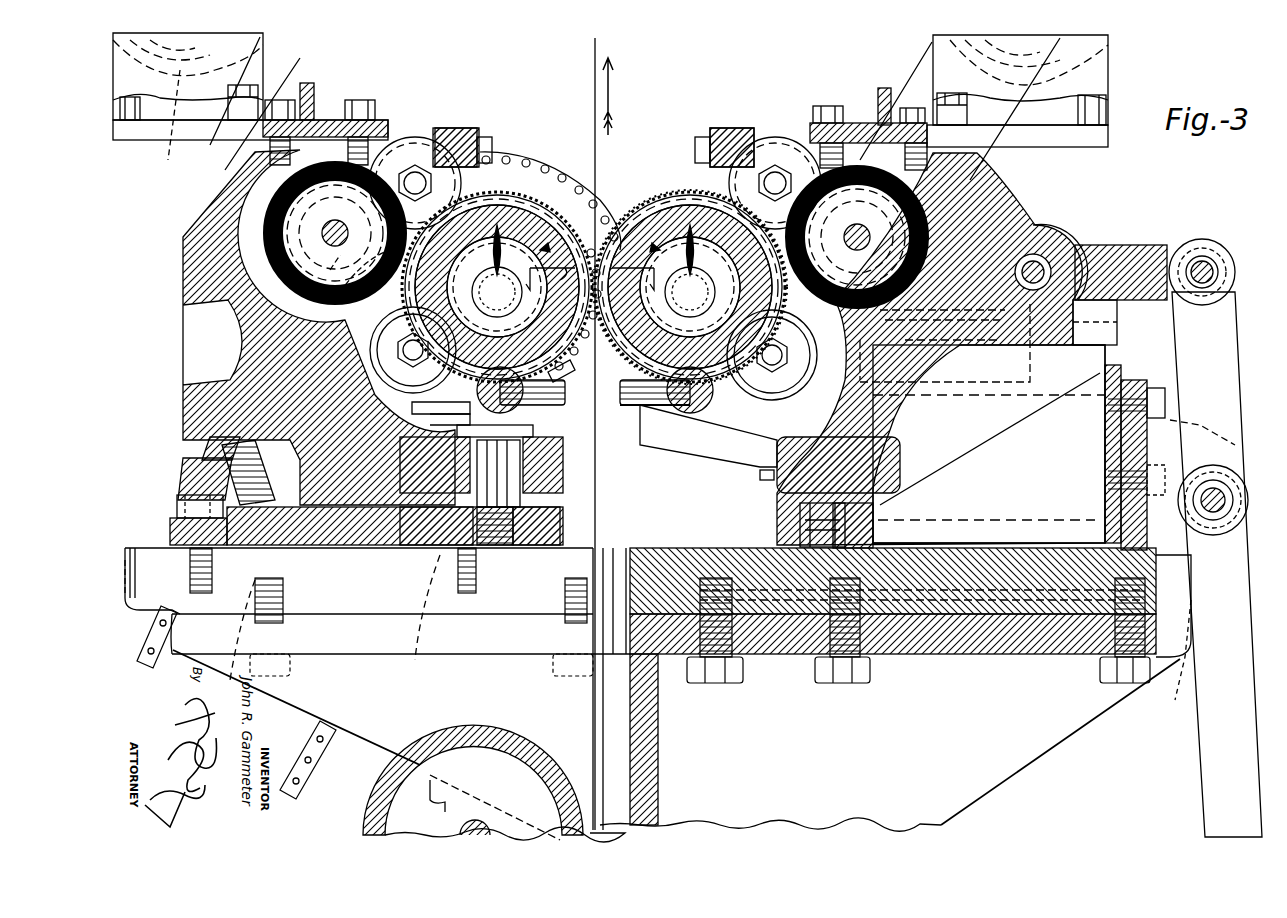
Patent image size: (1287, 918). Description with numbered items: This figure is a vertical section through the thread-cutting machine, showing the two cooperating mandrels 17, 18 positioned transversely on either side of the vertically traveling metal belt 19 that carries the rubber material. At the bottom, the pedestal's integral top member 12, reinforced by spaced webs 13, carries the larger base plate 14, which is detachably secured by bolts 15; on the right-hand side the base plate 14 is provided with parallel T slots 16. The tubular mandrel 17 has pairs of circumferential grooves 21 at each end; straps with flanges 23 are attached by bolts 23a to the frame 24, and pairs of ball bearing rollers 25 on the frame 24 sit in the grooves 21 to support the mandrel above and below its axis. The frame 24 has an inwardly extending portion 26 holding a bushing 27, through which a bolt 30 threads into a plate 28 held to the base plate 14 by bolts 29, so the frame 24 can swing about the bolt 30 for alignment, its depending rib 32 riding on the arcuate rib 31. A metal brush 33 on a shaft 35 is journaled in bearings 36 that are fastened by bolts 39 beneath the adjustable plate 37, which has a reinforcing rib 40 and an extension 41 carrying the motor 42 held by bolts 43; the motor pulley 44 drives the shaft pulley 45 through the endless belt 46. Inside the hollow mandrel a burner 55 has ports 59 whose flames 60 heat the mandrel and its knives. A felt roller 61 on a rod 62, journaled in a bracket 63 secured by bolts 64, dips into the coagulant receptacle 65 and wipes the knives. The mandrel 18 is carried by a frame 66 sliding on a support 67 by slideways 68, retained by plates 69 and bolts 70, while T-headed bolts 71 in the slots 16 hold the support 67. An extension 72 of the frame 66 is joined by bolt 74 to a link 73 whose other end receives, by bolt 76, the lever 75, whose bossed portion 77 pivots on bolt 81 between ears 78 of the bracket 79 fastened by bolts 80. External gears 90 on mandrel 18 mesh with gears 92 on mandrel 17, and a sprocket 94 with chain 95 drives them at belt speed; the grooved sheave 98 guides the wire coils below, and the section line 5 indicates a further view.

The direction arrow / section indicator 5 is at (593, 266).
The top member 12 is at (1088, 660).
The webs 13 is at (372, 735).
The base plate 14 is at (140, 610).
The bolts 15 is at (550, 660).
The T slots 16 is at (1177, 650).
The mandrel 17 is at (512, 205).
The mandrel 18 is at (668, 195).
The metal belt 19 is at (593, 497).
The circumferential grooves 21 is at (572, 185).
The flanges 23 is at (460, 128).
The bolts 23a is at (490, 145).
The frame 24 is at (205, 300).
The ball bearing rollers 25 is at (400, 138).
The inwardly extending portion 26 is at (363, 485).
The bushing 27 is at (556, 490).
The plate 28 is at (170, 525).
The bolts 29 is at (177, 500).
The bolt 30 is at (500, 468).
The arcuate rib 31 is at (183, 462).
The depending rib 32 is at (183, 440).
The metal brush 33 is at (330, 305).
The shaft 35 is at (320, 280).
The bearings 36 is at (300, 247).
The plate 37 is at (335, 120).
The bolts 39 is at (362, 105).
The rib 40 is at (314, 92).
The extension 41 is at (130, 140).
The motor 42 is at (155, 120).
The bolts 43 is at (255, 78).
The groove pulley 44 is at (170, 121).
The grooved pulley 45 is at (352, 300).
The endless belt 46 is at (262, 40).
The burner 55 is at (480, 283).
The ports 59 is at (500, 270).
The flames 60 is at (493, 240).
The felt roller 61 is at (540, 372).
The rod 62 is at (562, 388).
The bracket 63 is at (412, 407).
The bolts 64 is at (430, 420).
The receptacle 65 is at (548, 415).
The frame 66 is at (940, 412).
The support 67 is at (1090, 405).
The slideway 68 is at (1117, 325).
The plates 69 is at (868, 320).
The bolts 70 is at (865, 375).
The bolts 71 is at (800, 504).
The extension 72 is at (1045, 258).
The link 73 is at (1130, 246).
The bolt 74 is at (1035, 240).
The lever 75 is at (1235, 395).
The bolt 76 is at (1205, 262).
The bossed portion 77 is at (1235, 485).
The ears 78 is at (1215, 420).
The bracket 79 is at (1125, 385).
The bolts 80 is at (1158, 390).
The bolt 81 is at (1225, 498).
The external gears 90 is at (660, 185).
The external gears 92 is at (540, 160).
The sprocket 94 is at (575, 368).
The endless chain 95 is at (535, 165).
The sheave 98 is at (368, 800).